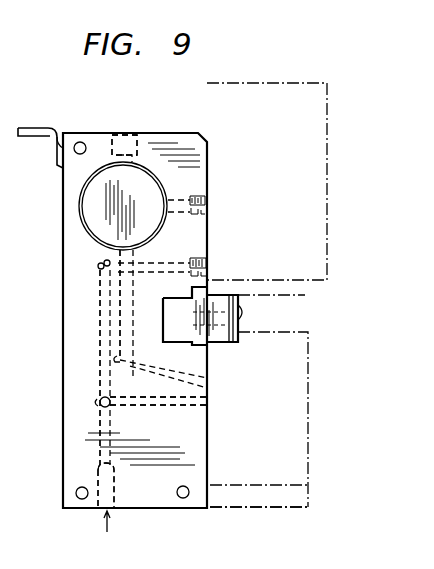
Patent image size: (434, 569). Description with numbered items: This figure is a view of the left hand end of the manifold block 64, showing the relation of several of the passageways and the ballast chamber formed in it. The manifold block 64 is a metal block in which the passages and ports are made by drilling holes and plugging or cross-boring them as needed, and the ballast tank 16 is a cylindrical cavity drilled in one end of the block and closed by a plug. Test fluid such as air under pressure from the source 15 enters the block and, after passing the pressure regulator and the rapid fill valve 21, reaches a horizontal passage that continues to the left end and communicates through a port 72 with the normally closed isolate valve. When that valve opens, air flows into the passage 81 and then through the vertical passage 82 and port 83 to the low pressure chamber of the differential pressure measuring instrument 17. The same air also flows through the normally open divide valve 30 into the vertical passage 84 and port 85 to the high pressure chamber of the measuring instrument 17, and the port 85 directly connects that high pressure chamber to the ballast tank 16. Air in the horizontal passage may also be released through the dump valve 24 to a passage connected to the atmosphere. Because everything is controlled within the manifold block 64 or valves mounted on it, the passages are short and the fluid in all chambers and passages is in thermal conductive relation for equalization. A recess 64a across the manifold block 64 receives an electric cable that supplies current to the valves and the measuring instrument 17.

The manifold block 64 is at (98, 133).
The ballast tank 16 is at (148, 197).
The port 85 is at (180, 200).
The measuring instrument 17 is at (327, 237).
The port 83 is at (168, 263).
The vertical passage 82 is at (98, 316).
The vertical passage 84 is at (133, 296).
The dump valve 24 is at (305, 290).
The recess 64a is at (180, 320).
The passage 81 is at (101, 397).
The port 72 is at (154, 406).
The divide valve 30 is at (308, 440).
The source 15 is at (111, 509).
The rapid fill valve 21 is at (280, 507).